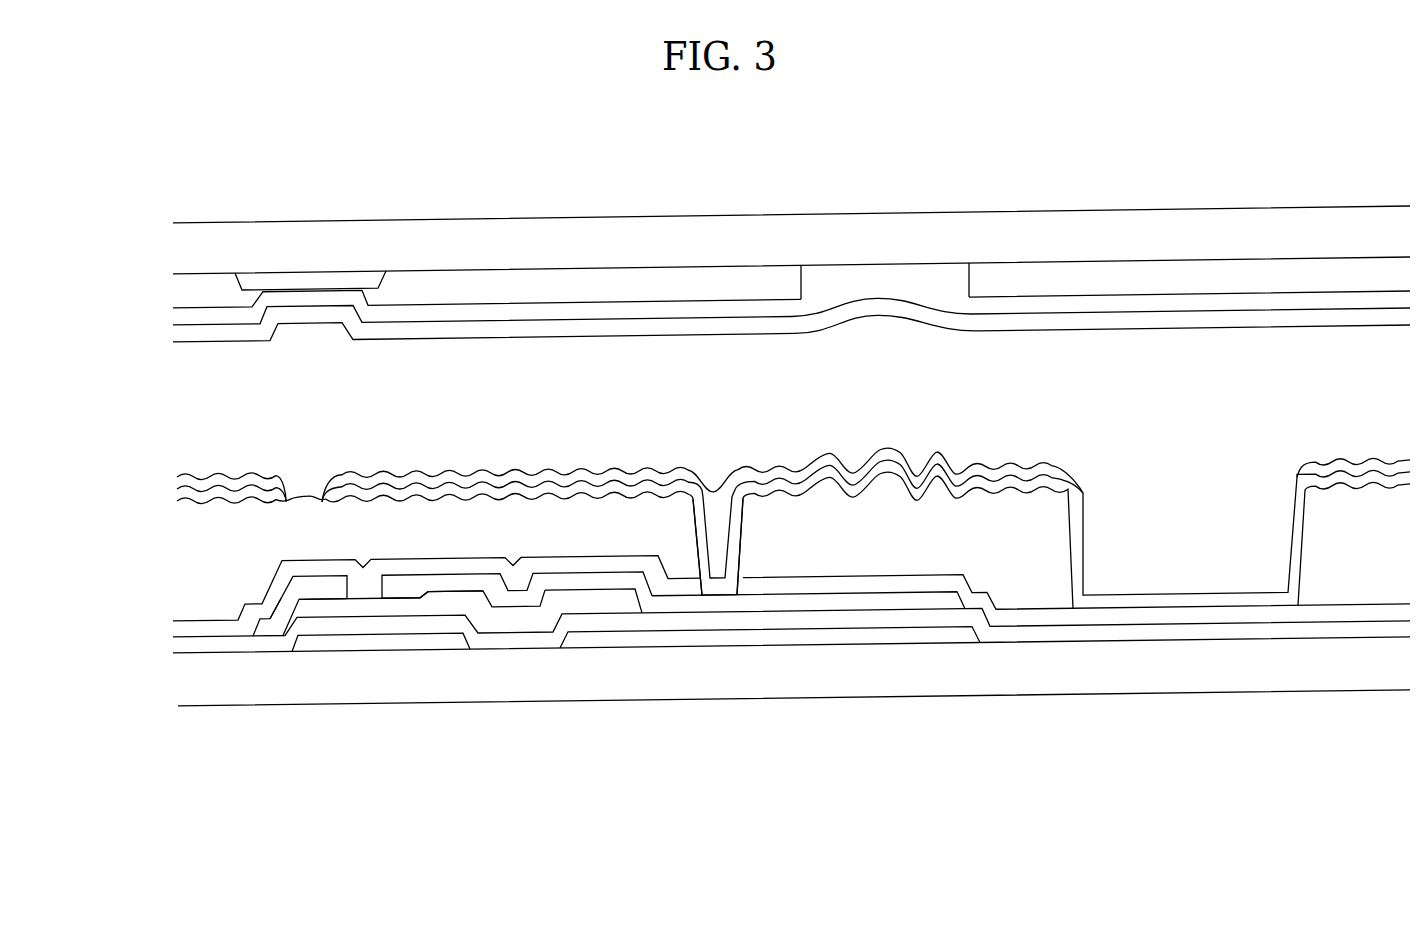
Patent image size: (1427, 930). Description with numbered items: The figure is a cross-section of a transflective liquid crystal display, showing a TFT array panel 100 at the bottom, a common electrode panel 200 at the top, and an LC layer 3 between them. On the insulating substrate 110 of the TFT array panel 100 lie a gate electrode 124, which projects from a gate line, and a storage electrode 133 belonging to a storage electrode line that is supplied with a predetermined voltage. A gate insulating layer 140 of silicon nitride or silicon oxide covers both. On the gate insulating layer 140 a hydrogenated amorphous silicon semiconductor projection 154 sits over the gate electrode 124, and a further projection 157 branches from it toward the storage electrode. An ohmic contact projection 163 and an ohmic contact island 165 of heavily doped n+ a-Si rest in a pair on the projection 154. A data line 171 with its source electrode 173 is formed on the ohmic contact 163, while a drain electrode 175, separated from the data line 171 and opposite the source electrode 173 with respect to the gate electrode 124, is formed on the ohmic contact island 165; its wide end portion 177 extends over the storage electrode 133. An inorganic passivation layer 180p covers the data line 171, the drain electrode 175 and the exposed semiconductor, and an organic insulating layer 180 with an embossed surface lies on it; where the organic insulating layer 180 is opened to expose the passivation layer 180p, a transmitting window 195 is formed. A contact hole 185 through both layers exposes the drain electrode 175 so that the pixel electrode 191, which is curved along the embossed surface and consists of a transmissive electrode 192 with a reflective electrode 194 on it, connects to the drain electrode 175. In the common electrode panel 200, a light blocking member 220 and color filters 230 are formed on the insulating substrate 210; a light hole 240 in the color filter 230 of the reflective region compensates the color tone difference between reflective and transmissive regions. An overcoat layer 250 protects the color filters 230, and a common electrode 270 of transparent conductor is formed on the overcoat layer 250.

The LC layer 3 is at (190, 397).
The TFT array panel 100 is at (172, 683).
The insulating substrate 110 is at (1122, 683).
The gate electrode 124 is at (385, 645).
The storage electrode 133 is at (887, 640).
The gate insulating layer 140 is at (1012, 638).
The projection of semiconductor stripe 154 is at (357, 612).
The projection of semiconductor stripe 157 is at (612, 610).
The projection of ohmic contact stripe 163 is at (304, 606).
The ohmic contact island 165 is at (415, 598).
The data line 171 is at (257, 630).
The source electrode 173 is at (318, 590).
The drain electrode 175 is at (433, 587).
The wide end portion 177 is at (797, 605).
The organic insulating layer 180 is at (238, 525).
The passivation layer 180p is at (313, 568).
The contact hole 185 is at (714, 498).
The pixel electrode 191 is at (665, 410).
The transmissive electrode 192 is at (612, 487).
The reflective electrode 194 is at (655, 482).
The transmitting window 195 is at (1173, 493).
The common electrode panel 200 is at (168, 247).
The insulating substrate 210 is at (357, 245).
The light blocking member 220 is at (287, 283).
The color filter 230 is at (205, 290).
The light hole 240 is at (890, 272).
The overcoat layer 250 is at (715, 308).
The common electrode 270 is at (633, 327).